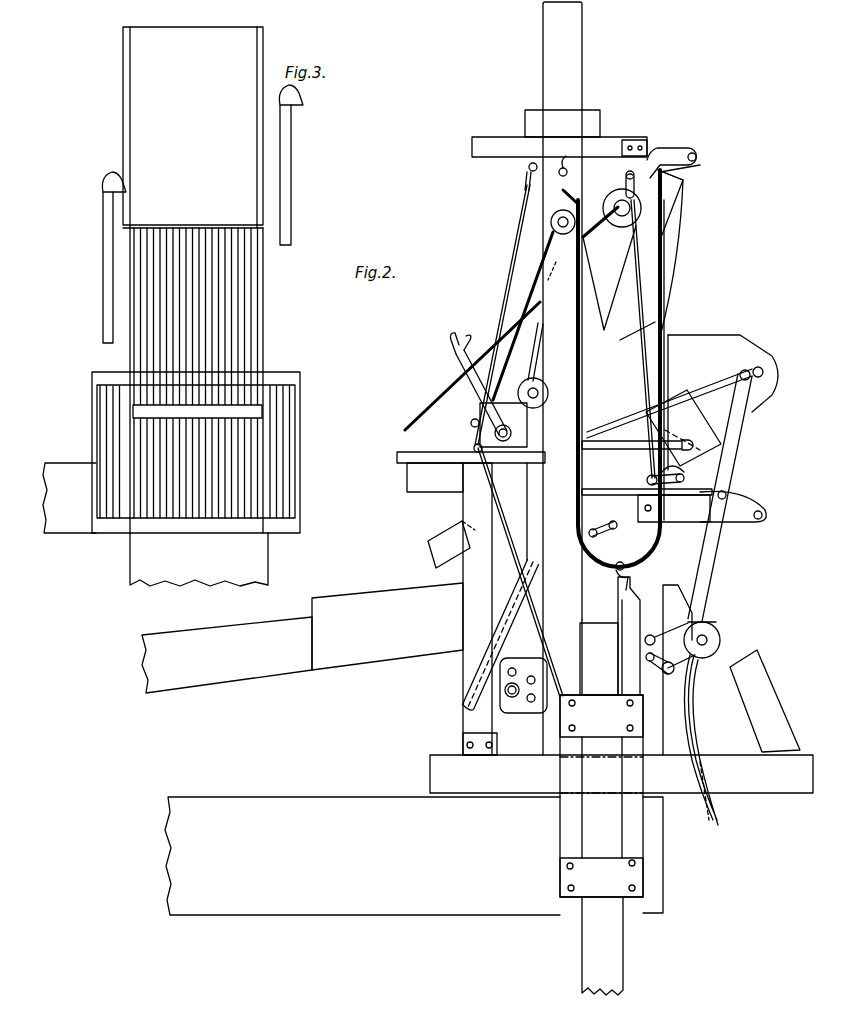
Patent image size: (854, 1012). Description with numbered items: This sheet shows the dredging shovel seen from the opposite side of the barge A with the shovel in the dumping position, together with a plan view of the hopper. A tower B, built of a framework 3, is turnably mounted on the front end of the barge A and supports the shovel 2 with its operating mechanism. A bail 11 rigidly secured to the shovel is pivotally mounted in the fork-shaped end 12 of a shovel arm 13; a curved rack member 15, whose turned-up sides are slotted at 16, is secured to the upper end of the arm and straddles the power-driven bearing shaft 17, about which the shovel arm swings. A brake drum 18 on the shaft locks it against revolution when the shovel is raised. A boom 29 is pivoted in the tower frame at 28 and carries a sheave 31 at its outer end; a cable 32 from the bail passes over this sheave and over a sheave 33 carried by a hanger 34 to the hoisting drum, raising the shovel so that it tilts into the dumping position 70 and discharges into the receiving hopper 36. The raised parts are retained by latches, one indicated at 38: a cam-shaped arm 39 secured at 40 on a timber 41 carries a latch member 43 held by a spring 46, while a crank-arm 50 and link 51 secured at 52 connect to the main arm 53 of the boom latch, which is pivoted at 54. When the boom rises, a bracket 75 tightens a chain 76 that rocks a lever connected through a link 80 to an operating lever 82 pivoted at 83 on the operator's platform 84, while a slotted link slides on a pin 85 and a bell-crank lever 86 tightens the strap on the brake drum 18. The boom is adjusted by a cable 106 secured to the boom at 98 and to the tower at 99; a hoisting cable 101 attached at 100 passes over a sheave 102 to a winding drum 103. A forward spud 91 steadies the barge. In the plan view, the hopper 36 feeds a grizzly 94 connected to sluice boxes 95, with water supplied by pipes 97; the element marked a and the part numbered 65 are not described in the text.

In FIG. 2, the barge A is at (414, 856).
In FIG. 2, the tower B is at (570, 378).
In FIG. 2, the shovel 2 is at (758, 360).
In FIG. 2, the framework 3 is at (559, 127).
In FIG. 2, the bail 11 is at (720, 383).
In FIG. 2, the fork-shaped end 12 is at (734, 478).
In FIG. 2, the shovel arm 13 is at (704, 605).
In FIG. 2, the curved rack member 15 is at (696, 745).
In FIG. 2, the slots 16 is at (688, 742).
In FIG. 2, the bearing shaft 17 is at (710, 652).
In FIG. 2, the brake drum 18 is at (712, 640).
In FIG. 2, the boom pivot 28 is at (512, 698).
In FIG. 2, the boom 29 is at (501, 635).
In FIG. 2, the sheave 31 is at (685, 182).
In FIG. 2, the cable 32 is at (665, 248).
In FIG. 2, the sheave 33 is at (621, 216).
In FIG. 2, the hanger 34 is at (615, 195).
In FIG. 3, the receiving hopper 36 is at (193, 127).
In FIG. 2, the receiving hopper 36 is at (683, 428).
In FIG. 2, the latch 38 is at (703, 145).
In FIG. 2, the cam-shaped arm 39 is at (748, 520).
In FIG. 2, the securing point 40 is at (647, 494).
In FIG. 2, the timber 41 is at (662, 508).
In FIG. 2, the latch member 43 is at (740, 505).
In FIG. 2, the spring 46 is at (649, 456).
In FIG. 2, the crank-arm 50 is at (639, 479).
In FIG. 2, the link 51 is at (638, 262).
In FIG. 2, the link attachment 52 is at (615, 173).
In FIG. 2, the main arm 53 is at (505, 305).
In FIG. 2, the pivot 54 is at (562, 156).
In FIG. 2, the bracket 65 is at (665, 150).
In FIG. 2, the dumping position 70 is at (742, 345).
In FIG. 2, the extension arm or bracket 75 is at (600, 515).
In FIG. 2, the chain 76 is at (584, 610).
In FIG. 2, the link 80 is at (459, 544).
In FIG. 2, the operating lever 82 is at (478, 384).
In FIG. 2, the pivot 83 is at (504, 425).
In FIG. 2, the operator's platform 84 is at (471, 397).
In FIG. 2, the pin 85 is at (664, 631).
In FIG. 2, the bell-crank lever 86 is at (660, 675).
In FIG. 2, the spud 91 is at (601, 845).
In FIG. 3, the grizzly 94 is at (196, 380).
In FIG. 2, the grizzly 94 is at (387, 626).
In FIG. 3, the sluice boxes 95 is at (155, 524).
In FIG. 2, the sluice boxes 95 is at (227, 655).
In FIG. 3, the pipes 97 is at (196, 214).
In FIG. 2, the cable attachment 98 is at (700, 165).
In FIG. 2, the cable attachment 99 is at (564, 196).
In FIG. 2, the attachment point 100 is at (622, 564).
In FIG. 2, the hoisting cable 101 is at (524, 316).
In FIG. 2, the sheave 102 is at (548, 223).
In FIG. 2, the winding drum 103 is at (547, 385).
In FIG. 2, the cable 106 is at (665, 330).
In FIG. 2, the pin a is at (729, 476).